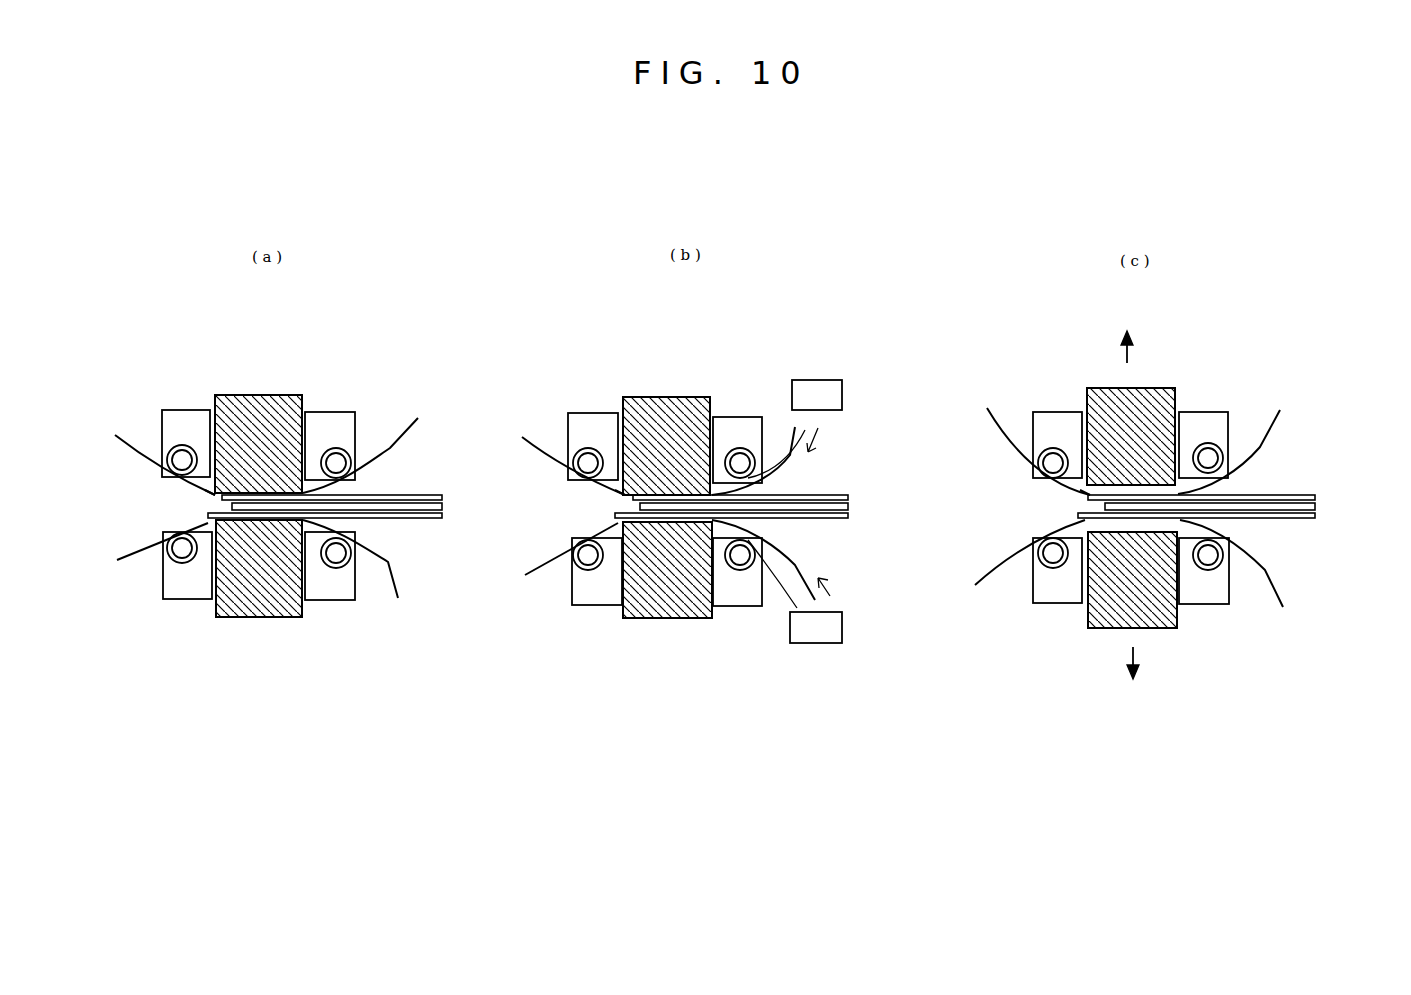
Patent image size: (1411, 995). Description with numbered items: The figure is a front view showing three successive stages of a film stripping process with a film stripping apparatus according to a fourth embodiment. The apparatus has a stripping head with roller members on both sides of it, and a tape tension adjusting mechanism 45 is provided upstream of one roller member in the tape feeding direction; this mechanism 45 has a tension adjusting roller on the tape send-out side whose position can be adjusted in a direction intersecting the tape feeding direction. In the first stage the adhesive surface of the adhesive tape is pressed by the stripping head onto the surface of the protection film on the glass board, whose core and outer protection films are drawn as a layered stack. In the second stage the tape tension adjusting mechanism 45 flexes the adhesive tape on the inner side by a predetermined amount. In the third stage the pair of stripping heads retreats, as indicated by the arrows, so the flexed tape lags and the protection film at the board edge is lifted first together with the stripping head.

The tape tension adjusting mechanism 45 is at (828, 380).